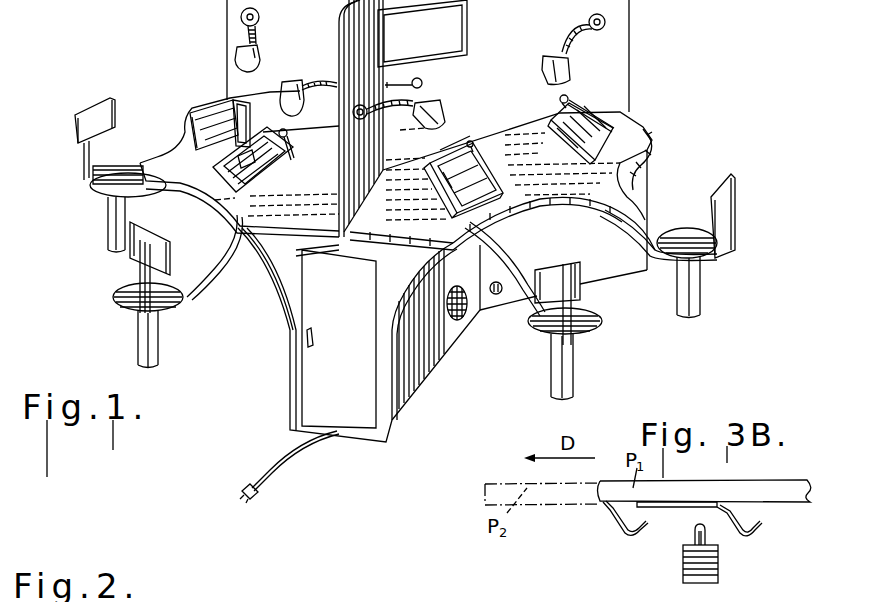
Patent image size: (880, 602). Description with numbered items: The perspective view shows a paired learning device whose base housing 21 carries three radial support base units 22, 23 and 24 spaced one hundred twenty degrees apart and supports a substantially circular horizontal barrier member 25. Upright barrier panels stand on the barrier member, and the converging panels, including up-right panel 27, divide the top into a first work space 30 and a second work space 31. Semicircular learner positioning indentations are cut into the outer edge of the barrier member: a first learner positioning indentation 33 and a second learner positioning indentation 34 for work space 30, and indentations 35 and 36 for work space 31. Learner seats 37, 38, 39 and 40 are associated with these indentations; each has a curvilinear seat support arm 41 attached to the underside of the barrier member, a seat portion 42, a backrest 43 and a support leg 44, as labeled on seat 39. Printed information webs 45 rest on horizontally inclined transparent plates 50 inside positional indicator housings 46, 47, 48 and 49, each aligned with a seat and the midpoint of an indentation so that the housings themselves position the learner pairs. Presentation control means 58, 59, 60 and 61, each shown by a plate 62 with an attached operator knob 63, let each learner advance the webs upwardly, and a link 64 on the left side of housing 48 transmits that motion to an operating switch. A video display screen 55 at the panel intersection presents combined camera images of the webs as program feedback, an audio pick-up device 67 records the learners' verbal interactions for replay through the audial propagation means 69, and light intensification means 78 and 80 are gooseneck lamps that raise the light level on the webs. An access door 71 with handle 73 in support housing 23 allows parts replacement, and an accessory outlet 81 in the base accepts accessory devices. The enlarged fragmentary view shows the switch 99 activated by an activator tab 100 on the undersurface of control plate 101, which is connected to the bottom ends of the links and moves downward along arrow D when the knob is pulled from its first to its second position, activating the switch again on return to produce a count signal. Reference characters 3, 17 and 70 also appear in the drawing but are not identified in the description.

In FIG. 1, the work surface 3 is at (435, 208).
In FIG. 1, the flexible lamp arm 17 is at (354, 117).
In FIG. 1, the base housing 21 is at (266, 314).
In FIG. 1, the radial support base unit 22 is at (250, 272).
In FIG. 1, the radial support base unit 23 is at (408, 384).
In FIG. 1, the radial support base unit 24 is at (574, 246).
In FIG. 1, the horizontal barrier member 25 is at (371, 193).
In FIG. 1, the up-right panel 27 is at (349, 31).
In FIG. 1, the first work space 30 is at (280, 31).
In FIG. 1, the second work space 31 is at (585, 50).
In FIG. 1, the first learner positioning indentation 33 is at (183, 137).
In FIG. 1, the second learner positioning indentation 34 is at (176, 188).
In FIG. 1, the learner positioning indentation 35 is at (560, 200).
In FIG. 1, the learner positioning indentation 36 is at (649, 147).
In FIG. 1, the learner seat 37 is at (80, 185).
In FIG. 1, the learner seat 38 is at (108, 300).
In FIG. 1, the learner seat 39 is at (535, 343).
In FIG. 1, the learner seat 40 is at (725, 257).
In FIG. 1, the seat support arm 41 is at (525, 300).
In FIG. 1, the seat portion 42 is at (598, 318).
In FIG. 1, the backrest 43 is at (594, 287).
In FIG. 1, the support leg 44 is at (578, 365).
In FIG. 1, the printed information web 45 is at (590, 132).
In FIG. 1, the positional indicator housing 46 is at (216, 105).
In FIG. 1, the positional indicator housing 47 is at (289, 167).
In FIG. 1, the positional indicator housing 48 is at (488, 137).
In FIG. 1, the positional indicator housing 49 is at (585, 101).
In FIG. 1, the transparent plate 50 is at (253, 185).
In FIG. 1, the video display screen 55 is at (443, 30).
In FIG. 1, the presentation control means 58 is at (241, 110).
In FIG. 1, the presentation control means 59 is at (322, 138).
In FIG. 1, the presentation control means 60 is at (451, 142).
In FIG. 1, the presentation control means 61 is at (550, 108).
In FIG. 1, the plate 62 is at (474, 153).
In FIG. 1, the operator knob 63 is at (471, 141).
In FIG. 1, the link 64 is at (447, 211).
In FIG. 1, the audio pick-up device 67 is at (423, 81).
In FIG. 1, the audial propagation means 69 is at (460, 316).
In FIG. 1, the power cord 70 is at (276, 461).
In FIG. 1, the access door 71 is at (318, 386).
In FIG. 1, the handle 73 is at (303, 339).
In FIG. 1, the light intensification means 78 is at (557, 20).
In FIG. 1, the light intensification means 80 is at (312, 77).
In FIG. 1, the accessory outlet 81 is at (489, 287).
In FIG. 3B, the switch 99 is at (718, 566).
In FIG. 3B, the activator tab 100 is at (758, 527).
In FIG. 3B, the control plate 101 is at (730, 493).